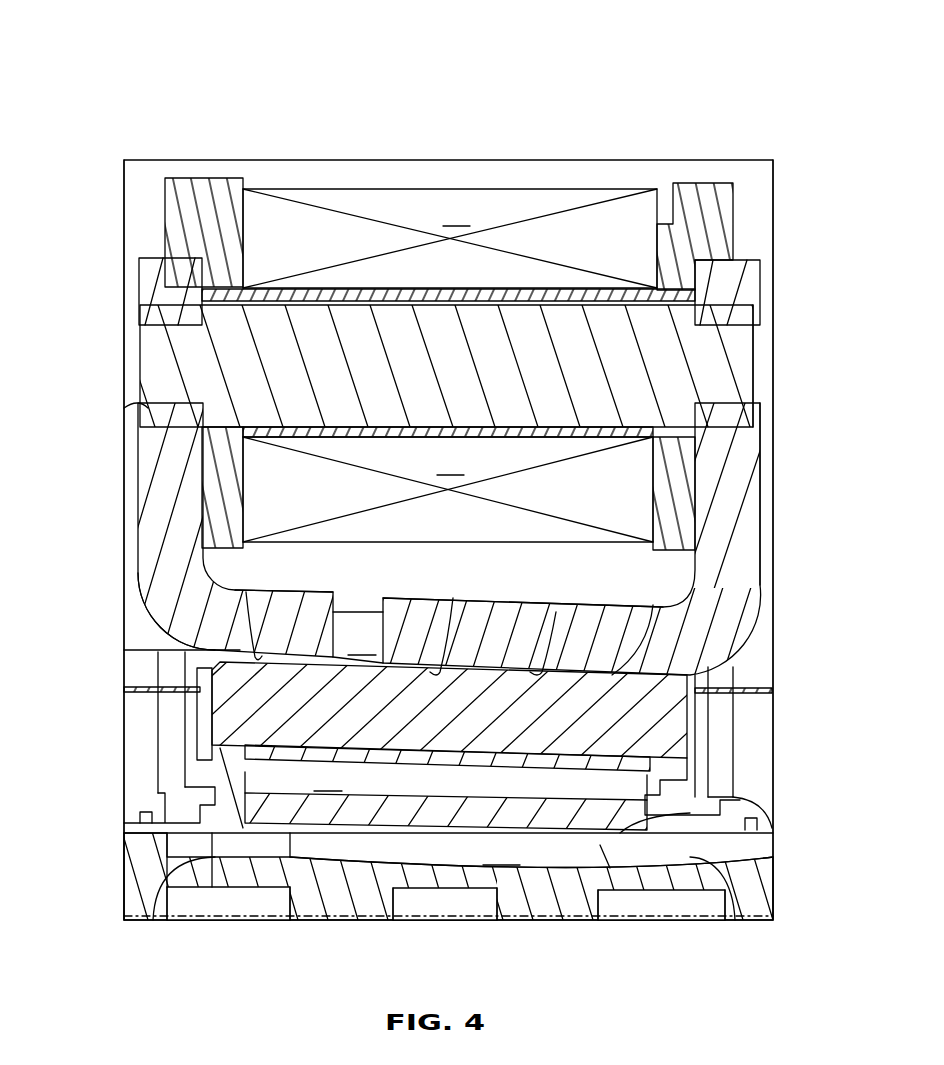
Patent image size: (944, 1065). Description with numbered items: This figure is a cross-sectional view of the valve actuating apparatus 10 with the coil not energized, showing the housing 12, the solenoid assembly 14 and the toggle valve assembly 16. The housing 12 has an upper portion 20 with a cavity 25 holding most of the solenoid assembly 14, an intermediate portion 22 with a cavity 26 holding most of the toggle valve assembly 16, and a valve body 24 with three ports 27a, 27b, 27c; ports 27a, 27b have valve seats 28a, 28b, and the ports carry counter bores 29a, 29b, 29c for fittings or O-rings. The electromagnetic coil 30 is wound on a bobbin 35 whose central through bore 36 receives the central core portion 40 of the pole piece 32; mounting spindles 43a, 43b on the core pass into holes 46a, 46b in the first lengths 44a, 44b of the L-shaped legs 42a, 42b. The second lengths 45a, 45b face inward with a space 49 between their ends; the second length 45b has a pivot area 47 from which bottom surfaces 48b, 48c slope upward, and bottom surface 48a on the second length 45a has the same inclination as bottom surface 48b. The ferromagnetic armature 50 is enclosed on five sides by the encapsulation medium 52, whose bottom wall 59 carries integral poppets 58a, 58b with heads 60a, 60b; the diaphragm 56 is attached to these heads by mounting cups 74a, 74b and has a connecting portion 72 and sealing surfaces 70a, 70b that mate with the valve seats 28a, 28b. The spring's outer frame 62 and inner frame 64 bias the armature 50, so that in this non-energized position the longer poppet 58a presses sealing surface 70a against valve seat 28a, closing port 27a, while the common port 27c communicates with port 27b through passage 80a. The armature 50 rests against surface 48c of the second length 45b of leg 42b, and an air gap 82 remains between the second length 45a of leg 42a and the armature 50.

The valve actuating apparatus 10 is at (145, 125).
The housing 12 is at (125, 355).
The solenoid assembly 14 is at (760, 243).
The toggle valve assembly 16 is at (760, 750).
The upper portion 20 is at (768, 632).
The intermediate portion 22 is at (760, 790).
The valve body 24 is at (125, 878).
The cavity 25 is at (358, 646).
The cavity 26 is at (446, 767).
The port 27a is at (212, 918).
The port 27b is at (668, 920).
The port 27c is at (482, 922).
The valve seat 28a is at (205, 893).
The valve seat 28b is at (600, 846).
The counter bore 29a is at (275, 924).
The counter bore 29b is at (612, 922).
The counter bore 29c is at (420, 920).
The electromagnetic coil 30 is at (450, 365).
The pole piece 32 is at (775, 399).
The bobbin 35 is at (735, 207).
The central through bore 36 is at (750, 345).
The central core portion 40 is at (142, 400).
The leg 42a is at (150, 572).
The leg 42b is at (752, 462).
The mounting spindle 43a is at (140, 322).
The mounting spindle 43b is at (750, 368).
The first length 44a is at (150, 472).
The first length 44b is at (752, 492).
The second length 45a is at (292, 598).
The second length 45b is at (497, 604).
The hole 46a is at (150, 406).
The hole 46b is at (760, 330).
The pivot area 47 is at (556, 612).
The bottom surface 48a is at (254, 586).
The bottom surface 48b is at (470, 590).
The bottom surface 48c is at (652, 612).
The space 49 is at (365, 602).
The armature 50 is at (222, 725).
The encapsulation medium 52 is at (200, 708).
The diaphragm 56 is at (172, 826).
The poppet 58a is at (190, 775).
The poppet 58b is at (720, 822).
The bottom wall 59 is at (388, 760).
The head 60a is at (200, 805).
The head 60b is at (735, 852).
The outer frame 62 is at (130, 686).
The inner frame 64 is at (745, 690).
The sealing surface 70a is at (190, 862).
The sealing surface 70b is at (735, 880).
The connecting portion 72 is at (375, 838).
The mounting cup 74a is at (252, 790).
The mounting cup 74b is at (620, 787).
The passage 80a is at (407, 849).
The air gap 82 is at (124, 650).